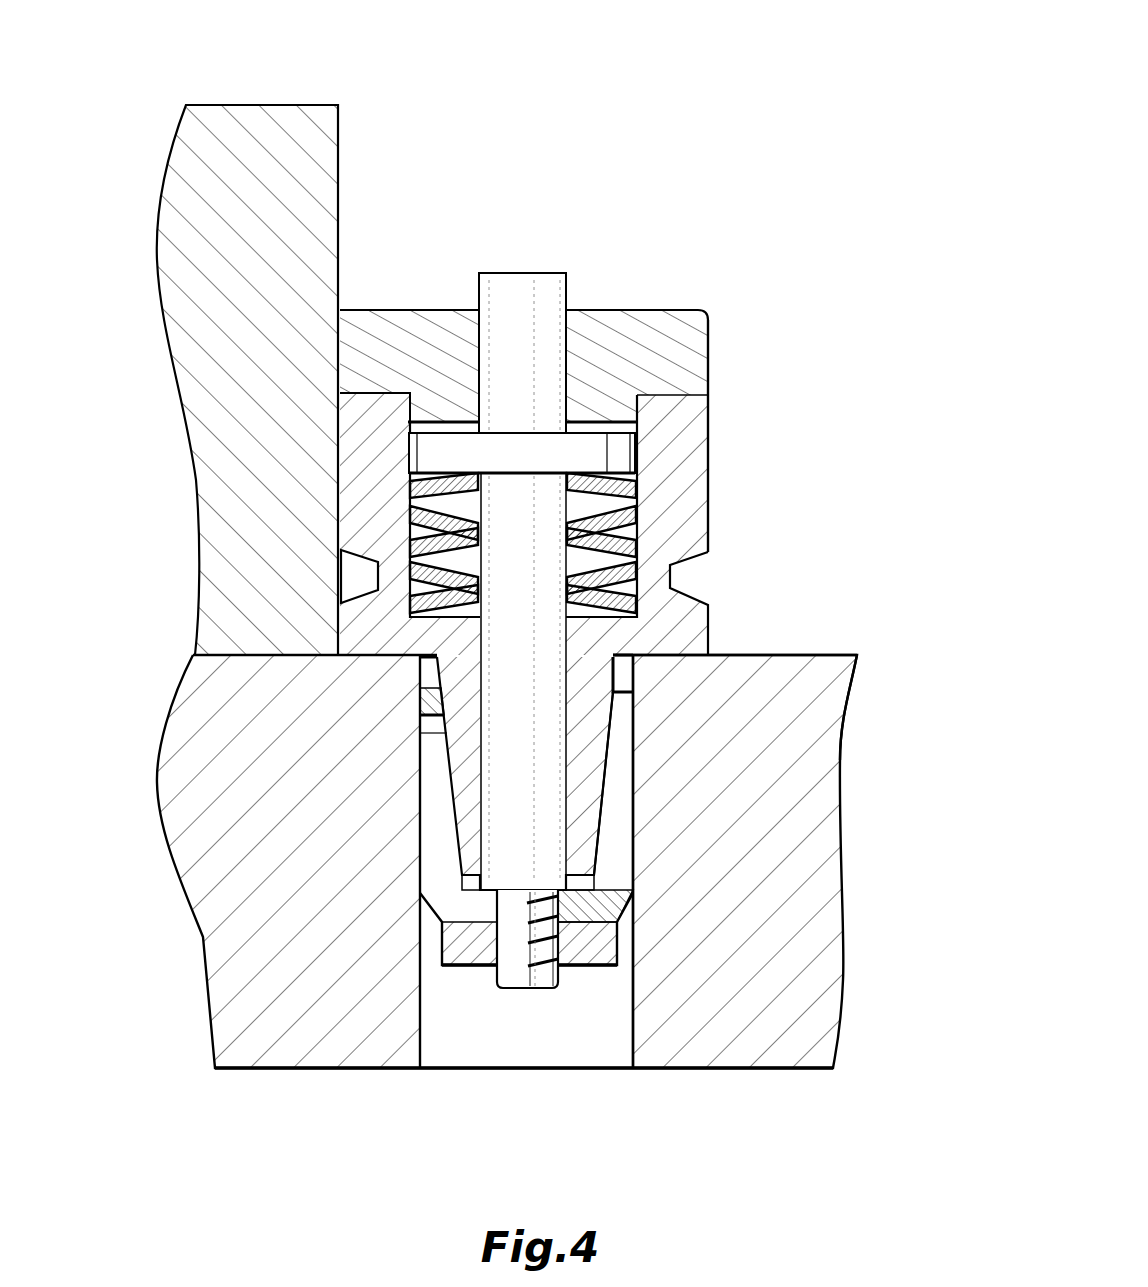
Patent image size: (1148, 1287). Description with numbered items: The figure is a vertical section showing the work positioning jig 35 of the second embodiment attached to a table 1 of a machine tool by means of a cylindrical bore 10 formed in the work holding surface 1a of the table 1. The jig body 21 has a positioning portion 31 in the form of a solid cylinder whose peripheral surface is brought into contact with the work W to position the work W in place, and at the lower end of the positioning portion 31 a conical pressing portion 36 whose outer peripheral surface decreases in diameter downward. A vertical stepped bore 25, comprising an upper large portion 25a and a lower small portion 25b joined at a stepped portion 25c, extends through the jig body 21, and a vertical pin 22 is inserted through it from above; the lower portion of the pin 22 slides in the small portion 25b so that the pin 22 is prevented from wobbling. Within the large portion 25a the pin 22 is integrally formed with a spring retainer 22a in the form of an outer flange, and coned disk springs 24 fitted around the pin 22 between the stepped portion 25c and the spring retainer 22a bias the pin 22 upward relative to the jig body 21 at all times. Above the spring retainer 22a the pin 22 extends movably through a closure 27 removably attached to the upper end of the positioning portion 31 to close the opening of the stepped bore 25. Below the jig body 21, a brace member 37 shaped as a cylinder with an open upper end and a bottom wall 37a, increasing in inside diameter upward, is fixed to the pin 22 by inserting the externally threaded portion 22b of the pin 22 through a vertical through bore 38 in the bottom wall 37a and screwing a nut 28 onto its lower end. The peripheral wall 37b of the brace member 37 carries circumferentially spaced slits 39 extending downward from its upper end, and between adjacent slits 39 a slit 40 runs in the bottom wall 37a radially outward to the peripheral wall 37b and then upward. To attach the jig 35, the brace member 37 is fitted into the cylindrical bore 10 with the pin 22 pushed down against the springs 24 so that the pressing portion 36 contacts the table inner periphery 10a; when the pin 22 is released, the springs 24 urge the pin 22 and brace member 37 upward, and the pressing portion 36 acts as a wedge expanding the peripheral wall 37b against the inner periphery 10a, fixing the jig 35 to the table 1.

The work W is at (246, 130).
The table 1 is at (893, 660).
The work holding surface 1a is at (832, 655).
The cylindrical bore 10 is at (628, 990).
The table inner periphery 10a is at (623, 837).
The jig body 21 is at (698, 487).
The vertical pin 22 is at (516, 285).
The spring retainer 22a is at (620, 450).
The externally threaded portion 22b is at (540, 973).
The coned disk springs 24 is at (637, 550).
The vertical stepped bore 25 is at (410, 520).
The upper large portion 25a is at (407, 430).
The lower small portion 25b is at (495, 770).
The stepped portion 25c is at (410, 582).
The closure 27 is at (660, 318).
The nut 28 is at (447, 952).
The positioning portion 31 is at (693, 630).
The work positioning jig 35 is at (722, 412).
The conical pressing portion 36 is at (588, 800).
The brace member 37 is at (625, 742).
The bottom wall 37a is at (635, 912).
The peripheral wall 37b is at (418, 712).
The vertical through bore 38 is at (502, 896).
The slits 39 is at (625, 767).
The slit 40 is at (430, 820).